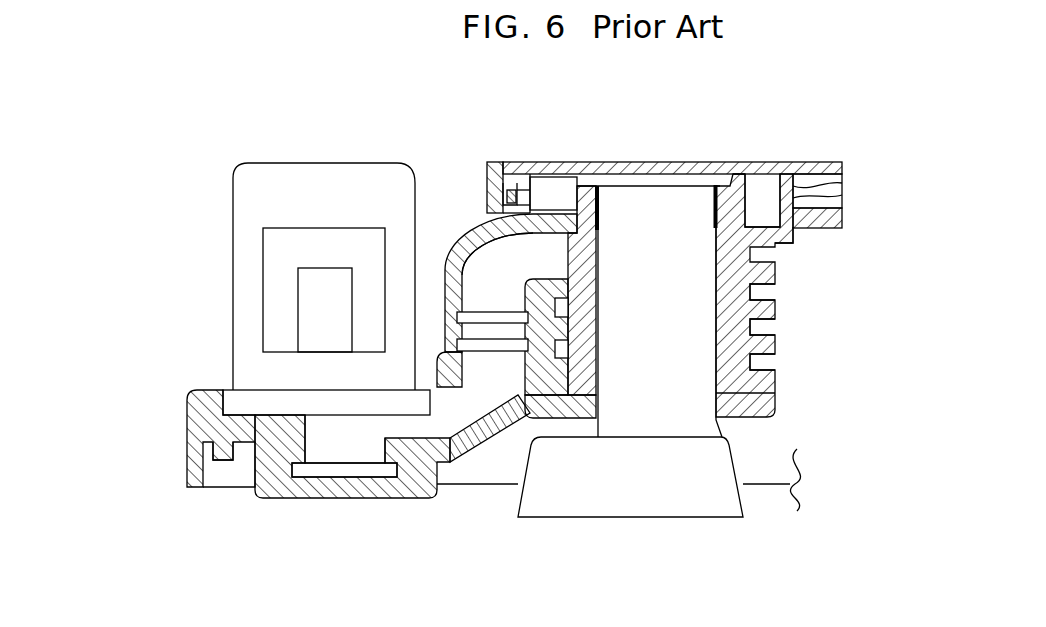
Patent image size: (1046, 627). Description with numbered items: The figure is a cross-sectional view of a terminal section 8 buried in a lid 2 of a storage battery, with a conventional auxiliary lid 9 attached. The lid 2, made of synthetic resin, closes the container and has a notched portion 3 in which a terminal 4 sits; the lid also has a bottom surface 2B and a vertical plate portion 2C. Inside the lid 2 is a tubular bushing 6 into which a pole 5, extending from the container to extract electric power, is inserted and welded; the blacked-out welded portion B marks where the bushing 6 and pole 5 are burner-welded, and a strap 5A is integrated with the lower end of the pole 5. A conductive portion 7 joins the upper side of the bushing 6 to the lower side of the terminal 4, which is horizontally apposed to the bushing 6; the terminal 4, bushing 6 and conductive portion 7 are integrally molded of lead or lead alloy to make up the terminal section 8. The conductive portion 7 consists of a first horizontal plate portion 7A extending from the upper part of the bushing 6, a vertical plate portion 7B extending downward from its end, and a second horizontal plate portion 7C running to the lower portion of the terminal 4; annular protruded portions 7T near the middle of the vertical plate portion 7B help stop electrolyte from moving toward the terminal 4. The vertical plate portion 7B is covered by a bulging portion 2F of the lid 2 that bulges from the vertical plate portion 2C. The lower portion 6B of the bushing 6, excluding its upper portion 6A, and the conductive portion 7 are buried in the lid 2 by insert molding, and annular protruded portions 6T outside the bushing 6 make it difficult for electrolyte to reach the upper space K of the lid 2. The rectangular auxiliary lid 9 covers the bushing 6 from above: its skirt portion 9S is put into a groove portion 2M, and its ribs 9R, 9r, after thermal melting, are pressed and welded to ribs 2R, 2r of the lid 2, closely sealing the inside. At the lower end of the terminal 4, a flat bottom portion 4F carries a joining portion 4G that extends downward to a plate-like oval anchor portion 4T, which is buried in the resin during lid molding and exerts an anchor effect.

The lid 2 is at (823, 228).
The bottom surface 2B is at (207, 390).
The vertical plate portion 2C is at (493, 162).
The bulging portion 2F is at (448, 252).
The groove portion 2M is at (510, 207).
The rib 2R is at (520, 191).
The rib 2r is at (842, 196).
The notched portion 3 is at (437, 176).
The terminal 4 is at (232, 183).
The bottom portion 4F is at (270, 402).
The joining portion 4G is at (333, 452).
The anchor portion 4T is at (345, 478).
The pole 5 is at (653, 210).
The strap 5A is at (635, 495).
The bushing 6 is at (722, 200).
The upper portion 6A is at (750, 190).
The lower portion 6B is at (790, 238).
The protruded portion 6T is at (760, 307).
The conductive portion 7 is at (505, 216).
The horizontal plate portion 7A is at (550, 247).
The vertical plate portion 7B is at (493, 272).
The horizontal plate portion 7C is at (460, 462).
The protruded portion 7T is at (500, 320).
The terminal section 8 is at (339, 139).
The auxiliary lid 9 is at (812, 162).
The rib 9R is at (487, 178).
The skirt portion 9S is at (503, 197).
The rib 9r is at (842, 182).
The welded portion B is at (605, 212).
The space K is at (758, 175).